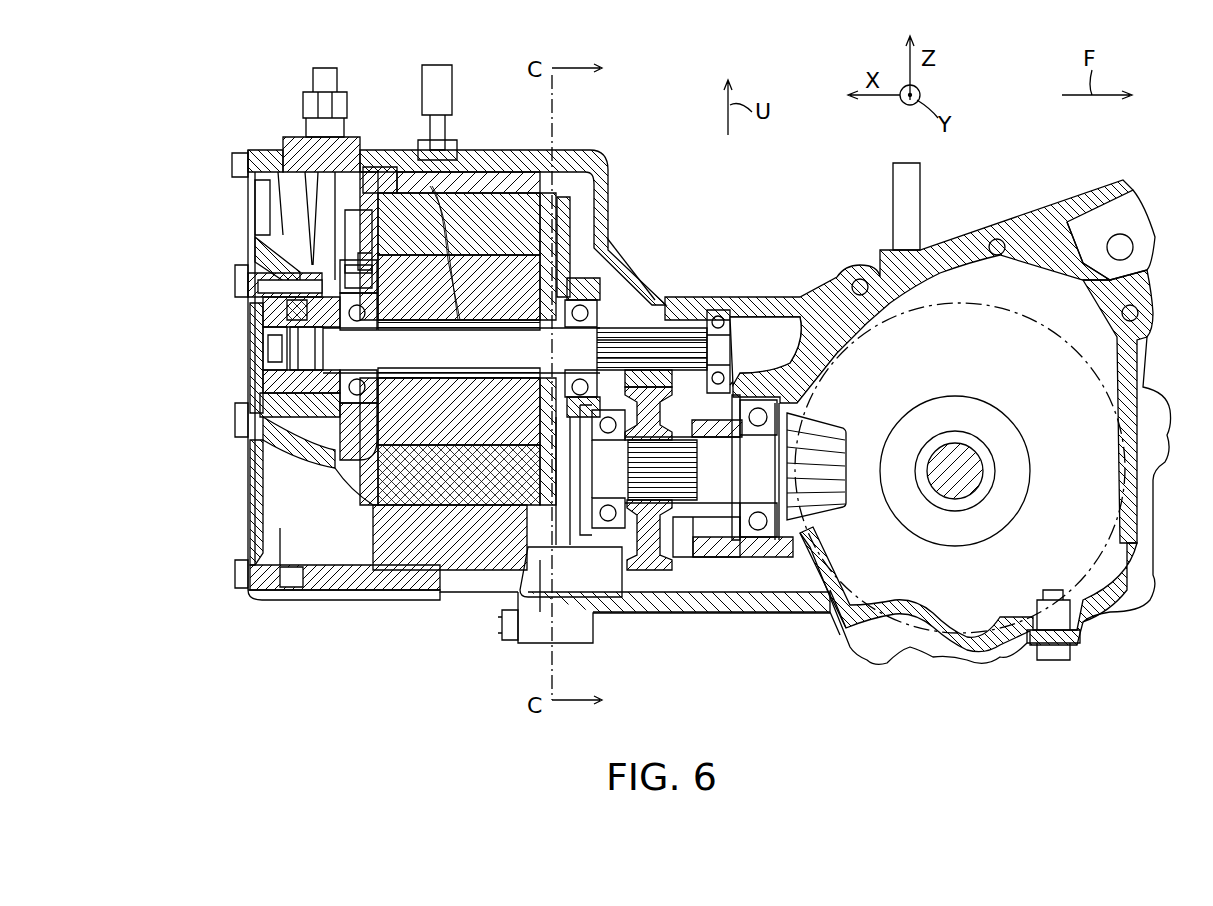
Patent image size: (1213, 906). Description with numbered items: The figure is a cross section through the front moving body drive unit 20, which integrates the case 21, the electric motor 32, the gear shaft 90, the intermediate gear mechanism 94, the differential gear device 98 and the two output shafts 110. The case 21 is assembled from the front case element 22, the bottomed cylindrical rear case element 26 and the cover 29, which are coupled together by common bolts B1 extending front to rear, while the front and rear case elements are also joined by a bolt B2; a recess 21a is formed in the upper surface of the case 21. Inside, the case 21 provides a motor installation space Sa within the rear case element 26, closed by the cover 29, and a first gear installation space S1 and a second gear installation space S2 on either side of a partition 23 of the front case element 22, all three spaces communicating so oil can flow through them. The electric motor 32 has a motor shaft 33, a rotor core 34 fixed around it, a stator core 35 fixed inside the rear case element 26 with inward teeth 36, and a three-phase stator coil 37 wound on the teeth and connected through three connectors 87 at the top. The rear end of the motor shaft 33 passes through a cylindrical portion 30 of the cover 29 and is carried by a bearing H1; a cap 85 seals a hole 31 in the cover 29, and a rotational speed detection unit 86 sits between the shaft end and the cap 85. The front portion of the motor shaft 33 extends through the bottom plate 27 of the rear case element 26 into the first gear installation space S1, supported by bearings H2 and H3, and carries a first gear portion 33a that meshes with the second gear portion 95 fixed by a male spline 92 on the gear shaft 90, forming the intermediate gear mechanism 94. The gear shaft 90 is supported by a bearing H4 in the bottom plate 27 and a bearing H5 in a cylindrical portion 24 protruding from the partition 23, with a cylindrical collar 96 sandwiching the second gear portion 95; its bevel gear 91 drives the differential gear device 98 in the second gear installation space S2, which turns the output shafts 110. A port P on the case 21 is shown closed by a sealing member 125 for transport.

The front moving body drive unit 20 is at (1010, 173).
The case 21 is at (620, 184).
The recess 21a is at (640, 280).
The front case element 22 is at (790, 298).
The partition 23 is at (825, 365).
The cylindrical portion 24 is at (785, 560).
The rear case element 26 is at (330, 573).
The bottom plate 27 is at (585, 260).
The cover 29 is at (263, 593).
The cylindrical portion 30 is at (262, 425).
The hole 31 is at (250, 300).
The electric motor 32 is at (412, 527).
The motor shaft 33 is at (650, 328).
The first gear portion 33a is at (675, 328).
The rotor core 34 is at (347, 465).
The stator core 35 is at (492, 195).
The teeth 36 is at (506, 195).
The three-phase stator coil 37 is at (365, 215).
The cap 85 is at (263, 385).
The rotational speed detection unit 86 is at (290, 348).
The connectors 87 is at (303, 100).
The gear shaft 90 is at (726, 480).
The bevel gear 91 is at (830, 520).
The male spline 92 is at (730, 346).
The intermediate gear mechanism 94 is at (652, 572).
The second gear portion 95 is at (668, 572).
The cylindrical collar 96 is at (800, 408).
The differential gear device 98 is at (1102, 620).
The output shafts 110 is at (960, 485).
The sealing member 125 is at (445, 93).
The bolts B1 is at (238, 165).
The bolt B2 is at (500, 625).
The bearing H1 is at (357, 378).
The bearing H2 is at (575, 365).
The bearing H3 is at (722, 307).
The bearing H4 is at (610, 498).
The bearing H5 is at (760, 503).
The port P is at (440, 320).
The first gear installation space S1 is at (600, 613).
The second gear installation space S2 is at (870, 635).
The motor installation space Sa is at (340, 537).